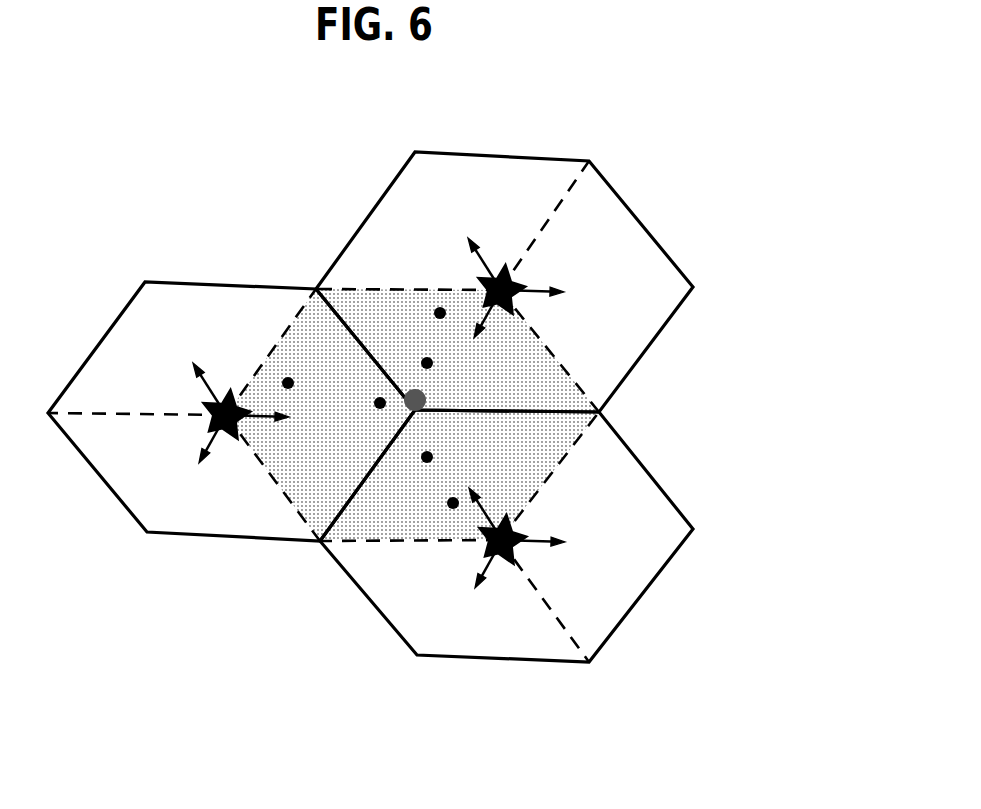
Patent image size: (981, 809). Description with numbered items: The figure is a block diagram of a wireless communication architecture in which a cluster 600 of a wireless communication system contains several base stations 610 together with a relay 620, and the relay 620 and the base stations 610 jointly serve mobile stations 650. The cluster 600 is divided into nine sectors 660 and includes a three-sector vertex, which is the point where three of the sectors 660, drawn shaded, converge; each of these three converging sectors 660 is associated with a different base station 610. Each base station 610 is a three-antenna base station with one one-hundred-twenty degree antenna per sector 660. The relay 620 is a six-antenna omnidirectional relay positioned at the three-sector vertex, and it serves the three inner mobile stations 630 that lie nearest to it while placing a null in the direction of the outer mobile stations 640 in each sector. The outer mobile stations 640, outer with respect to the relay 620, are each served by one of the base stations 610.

The cluster 600 is at (248, 150).
The base station 610 is at (545, 284).
The relay 620 is at (425, 398).
The inner mobile station 630 is at (440, 458).
The outer mobile station 640 is at (453, 500).
The mobile stations 650 is at (589, 432).
The sector 660 is at (443, 196).